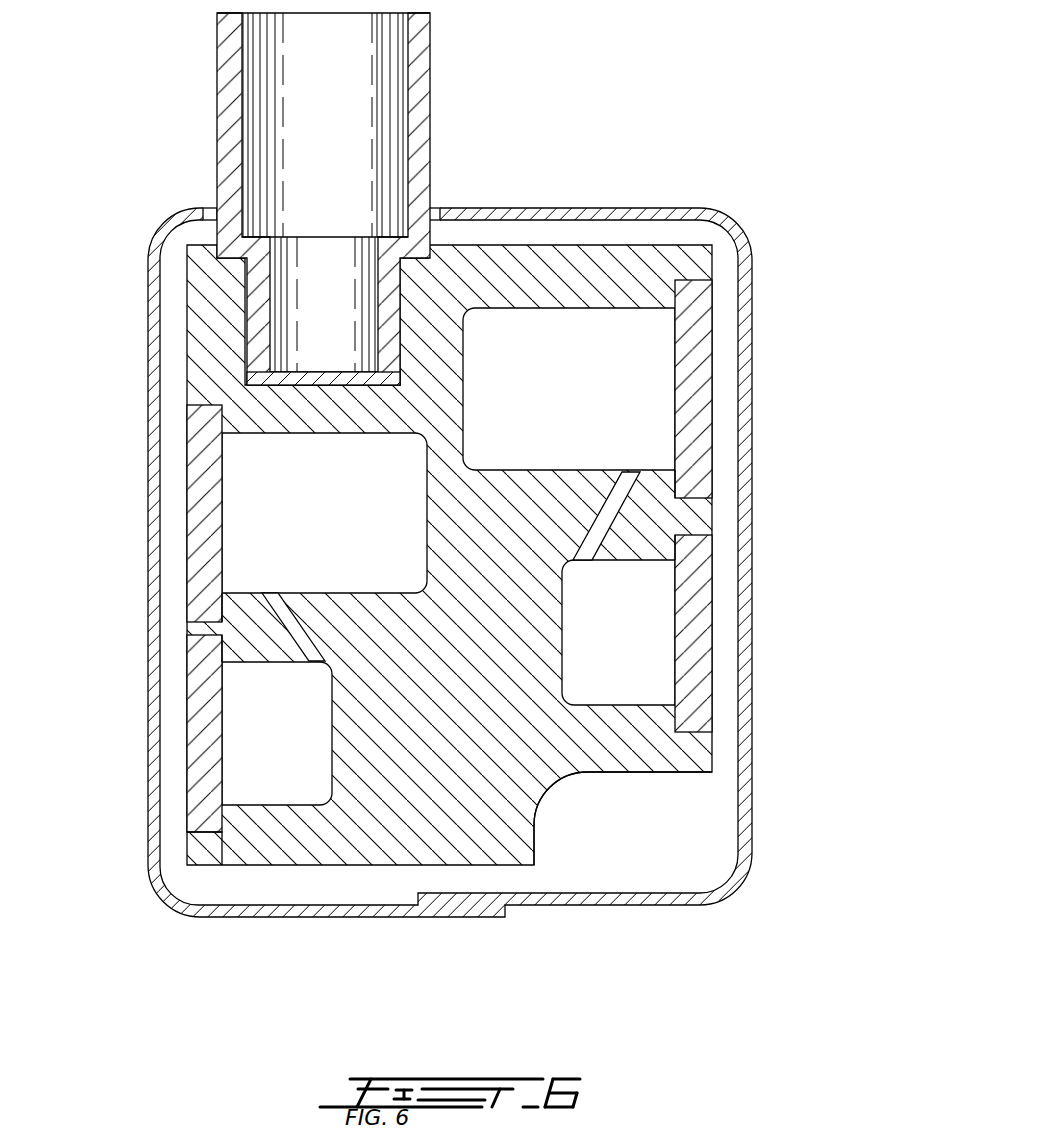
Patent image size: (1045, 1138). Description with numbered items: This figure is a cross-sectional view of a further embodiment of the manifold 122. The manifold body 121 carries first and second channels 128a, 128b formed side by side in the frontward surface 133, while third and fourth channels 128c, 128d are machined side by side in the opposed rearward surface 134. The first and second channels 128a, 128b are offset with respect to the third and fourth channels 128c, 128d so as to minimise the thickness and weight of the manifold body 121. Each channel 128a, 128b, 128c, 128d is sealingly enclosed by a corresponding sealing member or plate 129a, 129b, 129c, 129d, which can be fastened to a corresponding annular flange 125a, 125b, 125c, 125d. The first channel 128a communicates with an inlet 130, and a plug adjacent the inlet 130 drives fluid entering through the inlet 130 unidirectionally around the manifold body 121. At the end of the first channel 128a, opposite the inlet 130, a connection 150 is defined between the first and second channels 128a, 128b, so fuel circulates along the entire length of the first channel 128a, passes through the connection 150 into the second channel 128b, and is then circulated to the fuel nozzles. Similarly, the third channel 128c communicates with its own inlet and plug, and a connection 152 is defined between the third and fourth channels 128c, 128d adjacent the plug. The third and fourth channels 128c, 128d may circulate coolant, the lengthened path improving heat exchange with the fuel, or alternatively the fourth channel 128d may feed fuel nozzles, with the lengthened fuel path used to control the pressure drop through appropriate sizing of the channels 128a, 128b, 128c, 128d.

The manifold body 121 is at (454, 820).
The manifold 122 is at (647, 243).
The annular flange 125a is at (224, 596).
The annular flange 125b is at (218, 646).
The annular flange 125c is at (677, 483).
The annular flange 125d is at (677, 717).
The first channel 128a is at (263, 457).
The second channel 128b is at (258, 768).
The third channel 128c is at (633, 345).
The fourth channel 128d is at (642, 603).
The sealing member or plate 129a is at (204, 520).
The sealing member or plate 129b is at (204, 702).
The sealing member or plate 129c is at (693, 402).
The sealing member or plate 129d is at (695, 645).
The inlet 130 is at (372, 128).
The frontward surface 133 is at (180, 844).
The rearward surface 134 is at (712, 753).
The connection 150 is at (302, 638).
The connection 152 is at (608, 513).